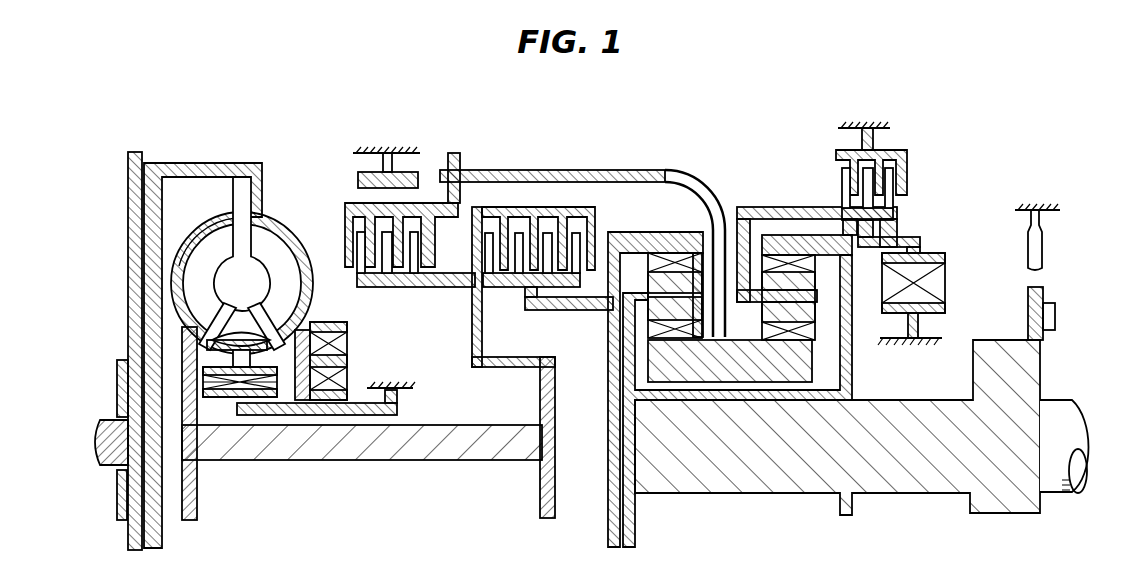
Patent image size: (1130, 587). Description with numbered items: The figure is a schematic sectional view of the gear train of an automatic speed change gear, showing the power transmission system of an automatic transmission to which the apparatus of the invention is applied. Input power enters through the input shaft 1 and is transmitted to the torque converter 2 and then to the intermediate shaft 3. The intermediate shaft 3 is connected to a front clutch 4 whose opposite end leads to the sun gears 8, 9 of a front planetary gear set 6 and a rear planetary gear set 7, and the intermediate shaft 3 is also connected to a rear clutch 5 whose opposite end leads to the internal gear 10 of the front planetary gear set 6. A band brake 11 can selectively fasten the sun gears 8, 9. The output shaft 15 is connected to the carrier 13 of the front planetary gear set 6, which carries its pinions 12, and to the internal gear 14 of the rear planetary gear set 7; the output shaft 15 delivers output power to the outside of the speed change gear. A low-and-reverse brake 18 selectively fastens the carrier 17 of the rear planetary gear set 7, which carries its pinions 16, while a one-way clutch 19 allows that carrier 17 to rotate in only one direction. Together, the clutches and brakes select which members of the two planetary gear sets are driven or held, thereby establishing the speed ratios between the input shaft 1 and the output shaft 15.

The input shaft 1 is at (100, 465).
The torque converter 2 is at (280, 221).
The intermediate shaft 3 is at (356, 462).
The front clutch 4 is at (345, 203).
The rear clutch 5 is at (537, 207).
The front planetary gear set 6 is at (605, 170).
The rear planetary gear set 7 is at (792, 232).
The sun gear 8 is at (650, 357).
The sun gear 9 is at (810, 352).
The internal gear 10 is at (633, 225).
The band brake 11 is at (418, 173).
The pinions 12 is at (668, 280).
The carrier 13 is at (616, 382).
The internal gear 14 is at (773, 240).
The output shaft 15 is at (1068, 407).
The pinions 16 is at (735, 277).
The carrier 17 is at (763, 288).
The low-and-reverse brake 18 is at (895, 152).
The one-way clutch 19 is at (923, 268).